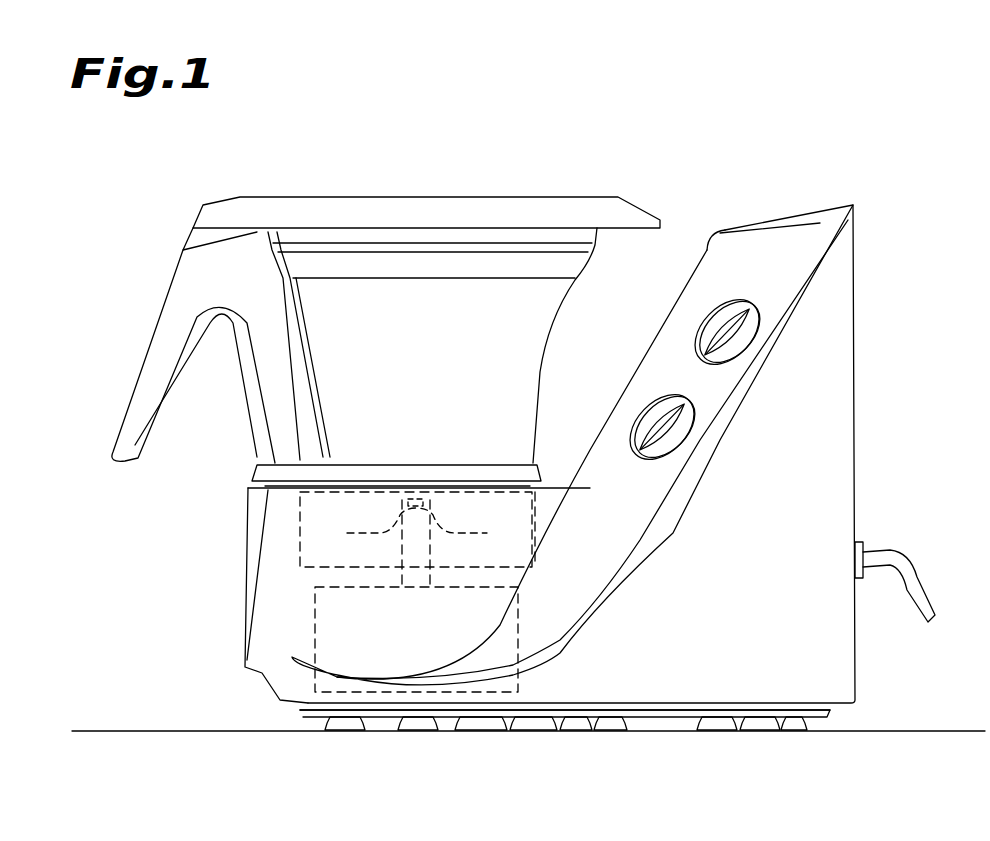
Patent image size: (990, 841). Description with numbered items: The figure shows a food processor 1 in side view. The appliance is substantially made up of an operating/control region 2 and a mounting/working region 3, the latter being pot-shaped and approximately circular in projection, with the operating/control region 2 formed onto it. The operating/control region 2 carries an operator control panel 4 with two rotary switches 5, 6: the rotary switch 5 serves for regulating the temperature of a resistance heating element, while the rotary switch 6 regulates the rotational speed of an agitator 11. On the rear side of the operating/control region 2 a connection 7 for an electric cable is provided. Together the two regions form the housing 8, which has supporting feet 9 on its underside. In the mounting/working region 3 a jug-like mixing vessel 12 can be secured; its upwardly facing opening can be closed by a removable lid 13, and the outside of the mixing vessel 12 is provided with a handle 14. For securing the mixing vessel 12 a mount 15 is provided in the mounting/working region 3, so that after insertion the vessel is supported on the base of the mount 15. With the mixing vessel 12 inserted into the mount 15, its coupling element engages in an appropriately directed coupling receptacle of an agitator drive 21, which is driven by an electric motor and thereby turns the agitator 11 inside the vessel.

The food processor 1 is at (713, 125).
The operating/control region 2 is at (853, 257).
The mounting/working region 3 is at (200, 537).
The operator control panel 4 is at (710, 252).
The rotary switch 5 is at (742, 343).
The rotary switch 6 is at (680, 438).
The connection 7 is at (893, 560).
The housing 8 is at (605, 675).
The supporting feet 9 is at (415, 723).
The agitator 11 is at (308, 570).
The mixing vessel 12 is at (447, 263).
The lid 13 is at (360, 210).
The handle 14 is at (173, 313).
The mount 15 is at (412, 535).
The agitator drive 21 is at (383, 622).